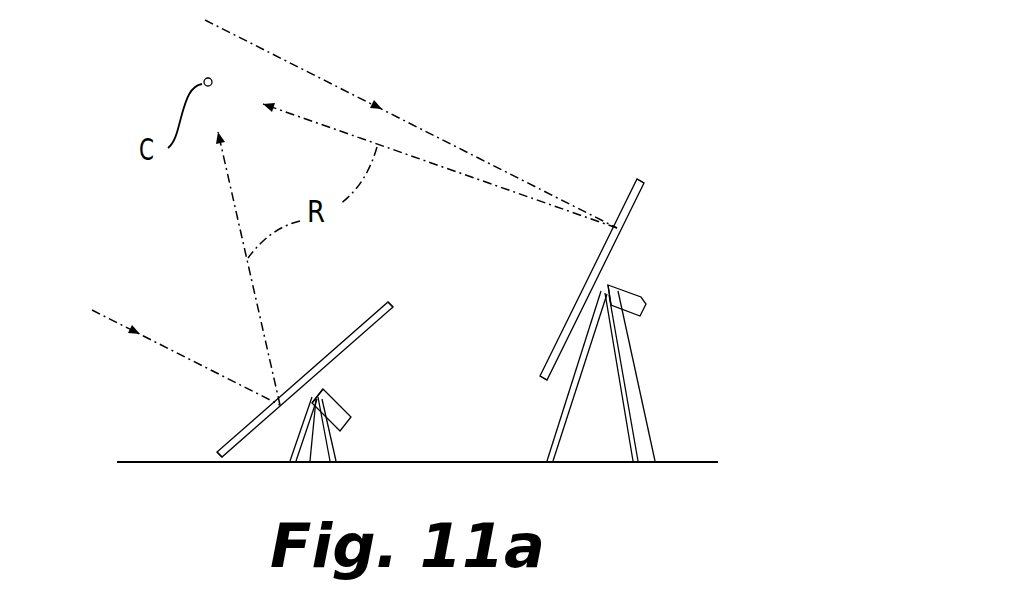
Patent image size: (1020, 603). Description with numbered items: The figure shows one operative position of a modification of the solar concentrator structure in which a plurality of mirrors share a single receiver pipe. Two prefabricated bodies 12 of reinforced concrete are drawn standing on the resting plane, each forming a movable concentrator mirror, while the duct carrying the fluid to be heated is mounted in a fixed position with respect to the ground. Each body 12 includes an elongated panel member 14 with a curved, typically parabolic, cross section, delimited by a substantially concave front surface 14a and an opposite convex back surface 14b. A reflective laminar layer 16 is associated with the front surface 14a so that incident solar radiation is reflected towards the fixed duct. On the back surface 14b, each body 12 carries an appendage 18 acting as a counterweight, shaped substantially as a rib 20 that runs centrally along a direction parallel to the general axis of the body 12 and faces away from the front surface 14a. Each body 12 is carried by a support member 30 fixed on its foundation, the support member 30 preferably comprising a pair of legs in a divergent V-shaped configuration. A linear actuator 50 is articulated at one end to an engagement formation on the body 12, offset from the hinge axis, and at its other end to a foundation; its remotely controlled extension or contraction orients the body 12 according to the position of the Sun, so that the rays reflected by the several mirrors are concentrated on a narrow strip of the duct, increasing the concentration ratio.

The prefabricated body 12 is at (185, 432).
The panel member 14 is at (317, 366).
The concave front surface 14a is at (250, 427).
The convex back surface 14b is at (365, 350).
The reflective laminar layer 16 is at (368, 348).
The appendage 18 is at (350, 385).
The rib 20 is at (352, 415).
The support member 30 is at (338, 445).
The linear actuator 50 is at (293, 443).